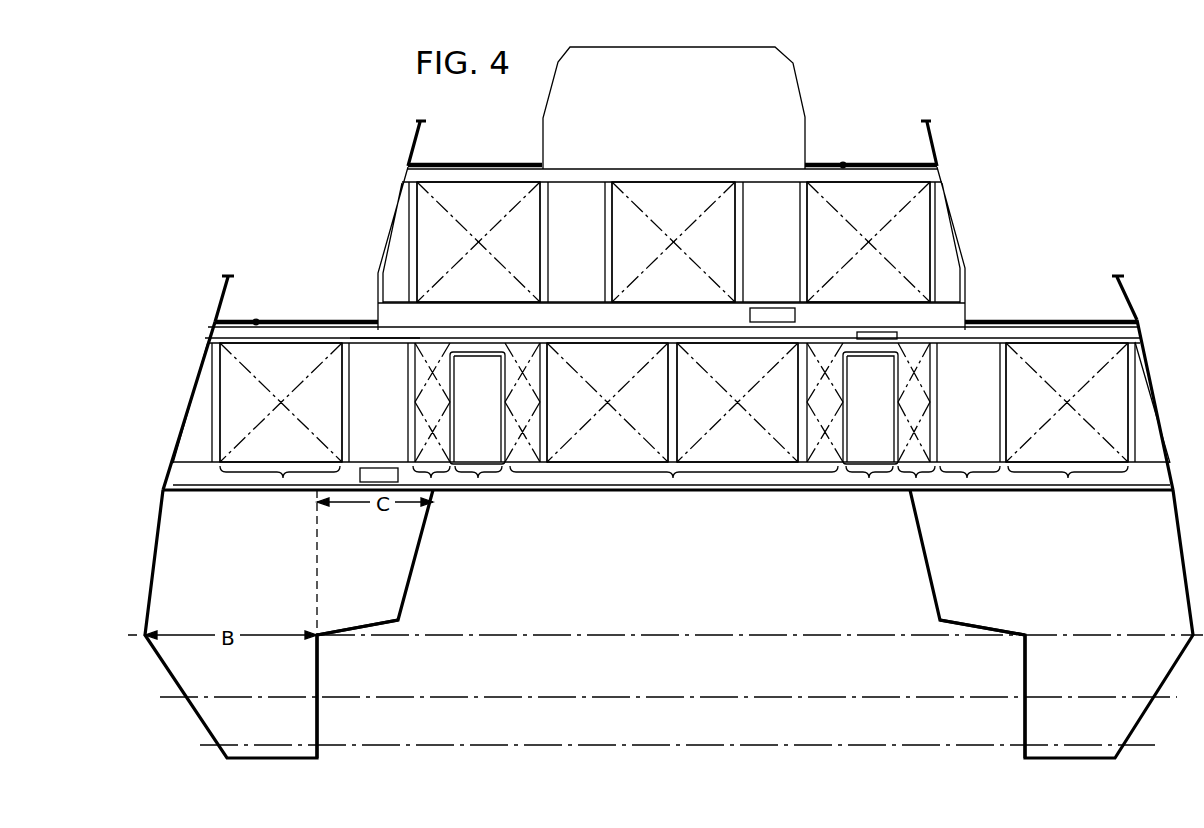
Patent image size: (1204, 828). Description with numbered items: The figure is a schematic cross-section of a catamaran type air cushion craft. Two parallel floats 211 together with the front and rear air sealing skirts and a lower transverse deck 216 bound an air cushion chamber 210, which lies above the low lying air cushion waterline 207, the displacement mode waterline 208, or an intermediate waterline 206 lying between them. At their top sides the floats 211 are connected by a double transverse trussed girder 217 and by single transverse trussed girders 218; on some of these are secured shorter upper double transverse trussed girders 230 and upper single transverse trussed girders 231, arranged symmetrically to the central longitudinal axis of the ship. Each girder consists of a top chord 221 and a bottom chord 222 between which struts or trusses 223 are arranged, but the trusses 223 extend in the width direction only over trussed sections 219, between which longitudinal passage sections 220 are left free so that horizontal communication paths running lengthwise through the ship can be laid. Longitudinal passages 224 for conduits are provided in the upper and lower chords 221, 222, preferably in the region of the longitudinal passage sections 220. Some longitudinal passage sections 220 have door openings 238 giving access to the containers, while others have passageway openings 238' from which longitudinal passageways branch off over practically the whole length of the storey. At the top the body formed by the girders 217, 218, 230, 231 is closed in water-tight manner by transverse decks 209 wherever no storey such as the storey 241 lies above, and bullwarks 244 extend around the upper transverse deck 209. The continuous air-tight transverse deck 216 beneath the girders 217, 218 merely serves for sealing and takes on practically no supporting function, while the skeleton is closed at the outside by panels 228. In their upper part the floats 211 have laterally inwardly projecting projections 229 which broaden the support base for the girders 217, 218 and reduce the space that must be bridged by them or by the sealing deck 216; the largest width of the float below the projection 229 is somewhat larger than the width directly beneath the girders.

The intermediate waterline 206 is at (719, 696).
The air cushion waterline 207 is at (719, 745).
The displacement mode waterline 208 is at (719, 634).
The transverse deck 209 is at (508, 164).
The air cushion chamber 210 is at (664, 596).
The float 211 is at (320, 663).
The lower transverse deck 216 is at (562, 489).
The double transverse trussed girder 217 is at (256, 320).
The single transverse trussed girder 218 is at (256, 322).
The trussed section 219 is at (501, 294).
The longitudinal passage section 220 is at (577, 196).
The top chord 221 is at (357, 339).
The bottom chord 222 is at (588, 318).
The strut 223 is at (712, 206).
The longitudinal passage for conduits 224 is at (893, 332).
The panel 228 is at (398, 222).
The inwardly projecting projection 229 is at (397, 612).
The upper double transverse trussed girder 230 is at (843, 164).
The upper single transverse trussed girder 231 is at (843, 165).
The door opening 238 is at (674, 408).
The passageway opening 238' is at (675, 328).
The storey 241 is at (788, 78).
The bullwark 244 is at (416, 134).